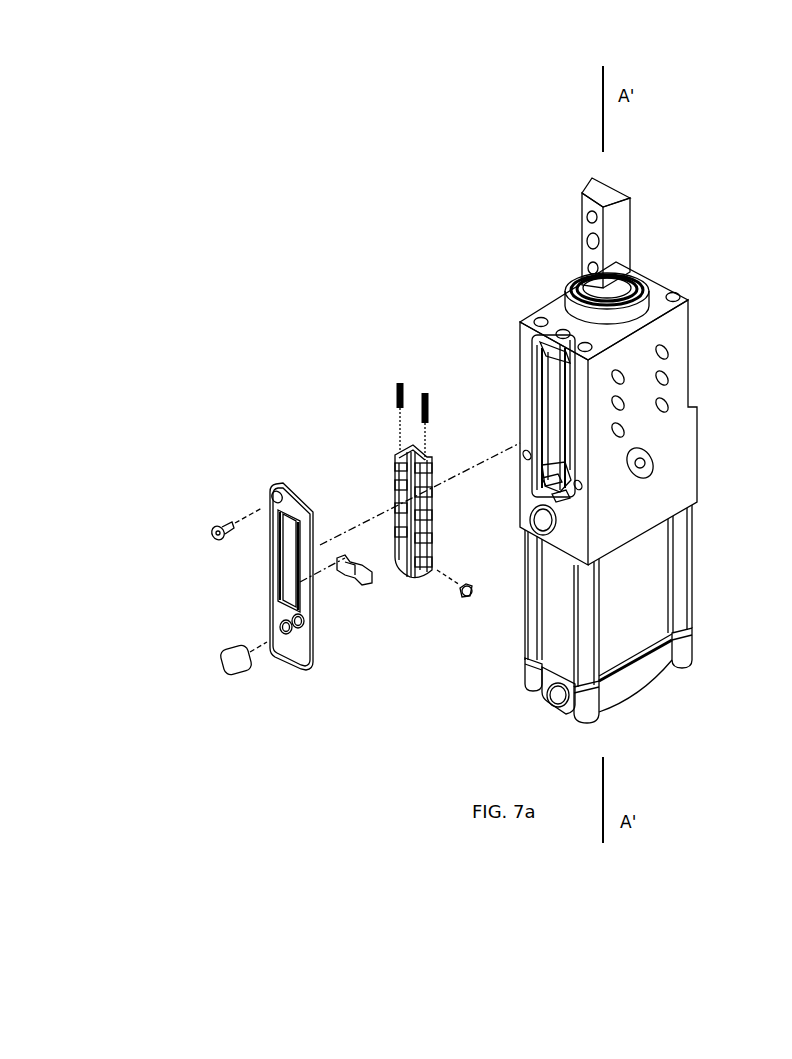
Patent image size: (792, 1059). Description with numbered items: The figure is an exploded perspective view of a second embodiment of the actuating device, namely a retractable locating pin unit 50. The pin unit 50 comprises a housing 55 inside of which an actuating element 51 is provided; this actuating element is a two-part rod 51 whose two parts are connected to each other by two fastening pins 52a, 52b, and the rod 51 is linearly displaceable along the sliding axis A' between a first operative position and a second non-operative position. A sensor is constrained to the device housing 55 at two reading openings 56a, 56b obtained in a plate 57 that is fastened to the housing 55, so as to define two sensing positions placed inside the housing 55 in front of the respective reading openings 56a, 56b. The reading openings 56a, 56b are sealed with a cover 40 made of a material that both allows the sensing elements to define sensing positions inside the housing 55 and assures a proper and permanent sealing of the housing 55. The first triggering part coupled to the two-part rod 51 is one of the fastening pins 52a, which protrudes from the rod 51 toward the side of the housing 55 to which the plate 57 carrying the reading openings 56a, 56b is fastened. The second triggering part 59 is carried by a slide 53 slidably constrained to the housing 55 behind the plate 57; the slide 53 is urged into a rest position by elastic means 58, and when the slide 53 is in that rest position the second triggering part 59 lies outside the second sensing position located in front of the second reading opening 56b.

The retractable locating pin unit 50 is at (541, 308).
The actuating element 51 is at (622, 235).
The housing 55 is at (690, 444).
The fastening pin 52a is at (560, 486).
The fastening pin 52b is at (560, 497).
The plate 57 is at (292, 503).
The reading opening 56a is at (291, 637).
The reading opening 56b is at (310, 627).
The cover 40 is at (237, 667).
The slide 53 is at (385, 483).
The elastic means 58 is at (428, 400).
The second triggering part 59 is at (462, 608).